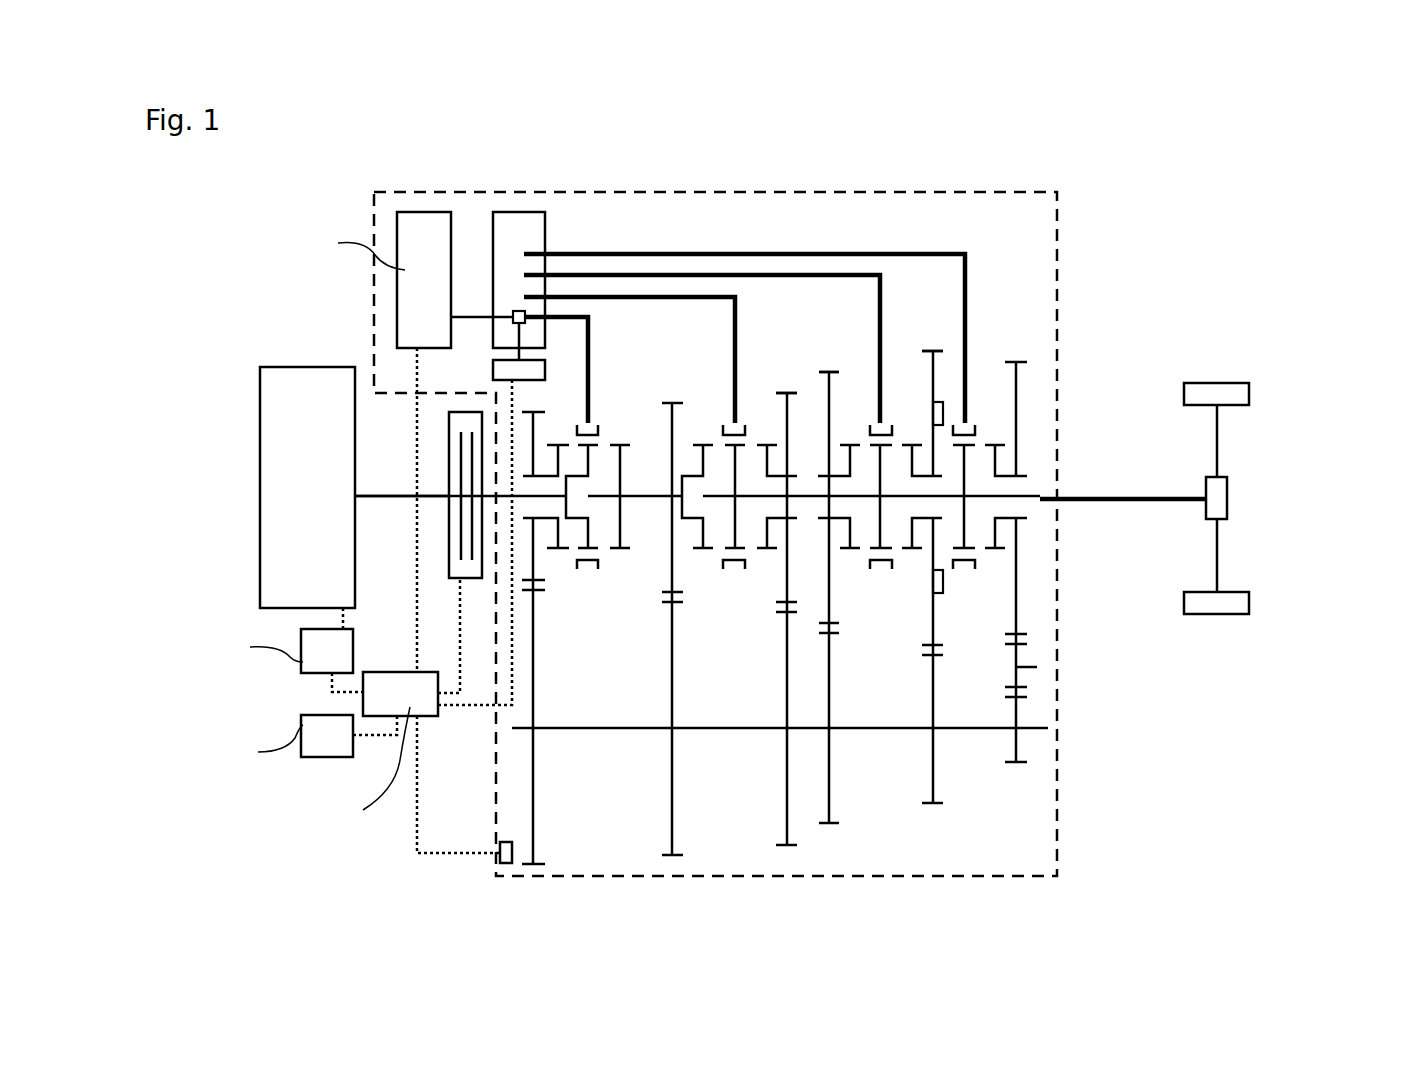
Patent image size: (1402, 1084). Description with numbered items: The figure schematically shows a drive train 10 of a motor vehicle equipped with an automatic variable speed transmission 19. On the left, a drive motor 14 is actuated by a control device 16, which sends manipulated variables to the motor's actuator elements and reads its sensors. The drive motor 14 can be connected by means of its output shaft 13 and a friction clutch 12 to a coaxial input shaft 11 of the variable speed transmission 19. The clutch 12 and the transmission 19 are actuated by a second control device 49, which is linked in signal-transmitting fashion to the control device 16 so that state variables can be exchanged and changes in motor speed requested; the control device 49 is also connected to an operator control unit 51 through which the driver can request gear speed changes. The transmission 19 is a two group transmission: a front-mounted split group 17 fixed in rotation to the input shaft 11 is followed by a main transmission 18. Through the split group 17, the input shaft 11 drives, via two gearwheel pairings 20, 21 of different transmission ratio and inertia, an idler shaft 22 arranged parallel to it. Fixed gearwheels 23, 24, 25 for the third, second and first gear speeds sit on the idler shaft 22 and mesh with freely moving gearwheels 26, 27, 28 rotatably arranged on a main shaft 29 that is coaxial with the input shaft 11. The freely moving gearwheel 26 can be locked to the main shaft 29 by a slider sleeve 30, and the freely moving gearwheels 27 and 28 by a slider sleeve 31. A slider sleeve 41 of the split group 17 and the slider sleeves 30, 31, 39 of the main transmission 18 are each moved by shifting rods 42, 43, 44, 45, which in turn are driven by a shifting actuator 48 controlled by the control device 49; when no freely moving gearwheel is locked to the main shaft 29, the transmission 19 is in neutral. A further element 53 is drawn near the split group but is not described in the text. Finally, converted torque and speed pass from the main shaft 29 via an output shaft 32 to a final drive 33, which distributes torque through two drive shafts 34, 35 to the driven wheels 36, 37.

The drive train 10 is at (1336, 170).
The input shaft 11 is at (491, 499).
The friction clutch 12 is at (450, 432).
The output shaft 13 is at (366, 493).
The drive motor 14 is at (307, 487).
The control device 16 is at (261, 651).
The split group 17 is at (610, 397).
The main transmission 18 is at (903, 340).
The variable speed transmission 19 is at (440, 165).
The gearwheel pairing 20 is at (533, 866).
The gearwheel pairing 21 is at (672, 857).
The idler shaft 22 is at (1038, 733).
The fixed gearwheel 23 is at (787, 847).
The fixed gearwheel 24 is at (829, 825).
The fixed gearwheel 25 is at (933, 805).
The freely moving gearwheel 26 is at (786, 393).
The freely moving gearwheel 27 is at (829, 372).
The freely moving gearwheel 28 is at (933, 352).
The main shaft 29 is at (1037, 497).
The slider sleeve 30 is at (743, 425).
The slider sleeve 31 is at (888, 427).
The output shaft 32 is at (1073, 500).
The final drive 33 is at (1228, 498).
The drive shaft 34 is at (1217, 456).
The drive shaft 35 is at (1217, 549).
The driven wheel 36 is at (1249, 392).
The driven wheel 37 is at (1249, 605).
The slider sleeve 39 is at (953, 568).
The slider sleeve 41 is at (578, 569).
The shifting rod 42 is at (565, 313).
The shifting rod 43 is at (578, 296).
The shifting rod 44 is at (608, 276).
The shifting rod 45 is at (703, 252).
The shifting actuator 48 is at (352, 280).
The control device 49 is at (365, 763).
The operator control unit 51 is at (247, 743).
The sensor 53 is at (499, 864).